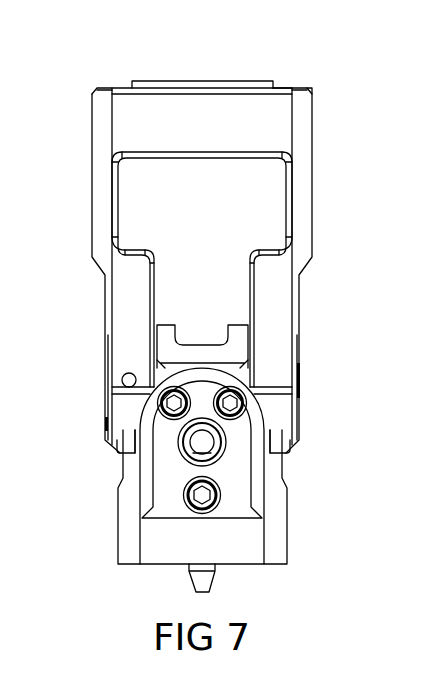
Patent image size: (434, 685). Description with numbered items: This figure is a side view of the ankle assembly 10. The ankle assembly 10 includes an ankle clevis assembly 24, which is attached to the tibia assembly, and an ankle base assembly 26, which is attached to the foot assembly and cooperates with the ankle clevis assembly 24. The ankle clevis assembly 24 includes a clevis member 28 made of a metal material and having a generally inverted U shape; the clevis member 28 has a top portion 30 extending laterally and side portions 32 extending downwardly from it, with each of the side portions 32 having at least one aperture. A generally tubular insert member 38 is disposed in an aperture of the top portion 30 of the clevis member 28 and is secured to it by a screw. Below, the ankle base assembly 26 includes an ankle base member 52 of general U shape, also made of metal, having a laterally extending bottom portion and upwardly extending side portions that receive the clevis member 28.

The ankle assembly 10 is at (100, 70).
The ankle clevis assembly 24 is at (92, 134).
The ankle base assembly 26 is at (116, 534).
The clevis member 28 is at (313, 90).
The top portion 30 is at (284, 87).
The side portions 32 is at (98, 237).
The insert member 38 is at (222, 80).
The ankle base member 52 is at (186, 547).